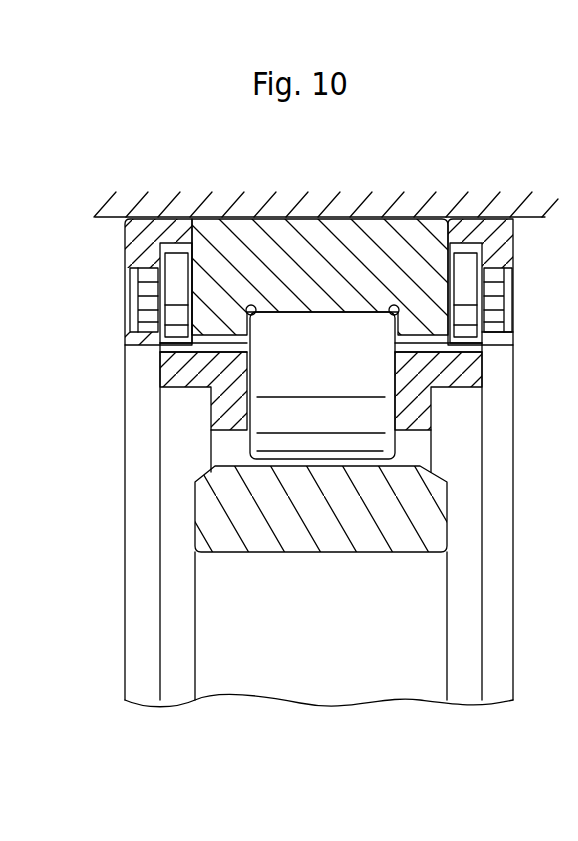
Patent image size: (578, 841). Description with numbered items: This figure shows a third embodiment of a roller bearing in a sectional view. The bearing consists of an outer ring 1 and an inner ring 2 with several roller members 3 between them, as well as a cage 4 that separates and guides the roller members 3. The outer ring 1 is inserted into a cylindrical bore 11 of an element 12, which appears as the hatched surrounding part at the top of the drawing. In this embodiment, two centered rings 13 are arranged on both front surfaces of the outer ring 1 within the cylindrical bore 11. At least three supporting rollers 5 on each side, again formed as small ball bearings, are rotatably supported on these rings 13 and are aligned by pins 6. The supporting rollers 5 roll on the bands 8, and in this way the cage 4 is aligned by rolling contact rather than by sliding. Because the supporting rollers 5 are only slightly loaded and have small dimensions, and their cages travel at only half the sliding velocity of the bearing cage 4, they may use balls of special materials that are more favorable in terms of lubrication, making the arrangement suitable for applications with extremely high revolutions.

The outer ring 1 is at (277, 250).
The inner ring 2 is at (255, 494).
The roller members 3 is at (272, 432).
The cage 4 is at (209, 386).
The supporting rollers 5 is at (126, 273).
The pins 6 is at (128, 309).
The bands 8 is at (192, 344).
The cylindrical bore 11 is at (534, 228).
The element 12 is at (392, 205).
The centered rings 13 is at (150, 237).